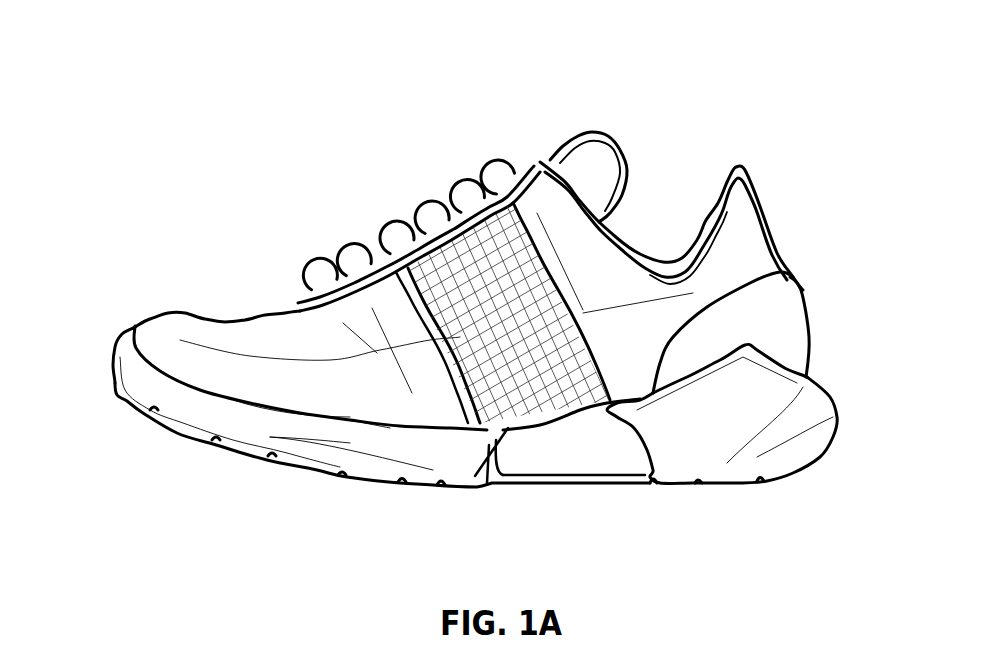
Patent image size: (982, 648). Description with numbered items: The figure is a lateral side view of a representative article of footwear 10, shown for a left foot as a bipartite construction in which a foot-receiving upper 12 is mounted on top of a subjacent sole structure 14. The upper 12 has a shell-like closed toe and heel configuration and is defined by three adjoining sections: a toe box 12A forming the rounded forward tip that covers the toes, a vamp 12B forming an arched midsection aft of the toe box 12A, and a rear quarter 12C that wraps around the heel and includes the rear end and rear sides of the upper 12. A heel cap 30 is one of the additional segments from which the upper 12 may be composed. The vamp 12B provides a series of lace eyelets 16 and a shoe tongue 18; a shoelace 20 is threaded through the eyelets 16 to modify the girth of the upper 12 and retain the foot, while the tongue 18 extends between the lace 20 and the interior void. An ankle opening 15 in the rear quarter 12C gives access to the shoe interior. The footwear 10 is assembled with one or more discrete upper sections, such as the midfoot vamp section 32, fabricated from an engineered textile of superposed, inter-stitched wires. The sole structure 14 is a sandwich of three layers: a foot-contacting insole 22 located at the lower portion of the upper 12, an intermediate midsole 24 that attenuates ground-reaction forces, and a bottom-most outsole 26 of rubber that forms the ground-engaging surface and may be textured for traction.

The article of footwear 10 is at (248, 74).
The upper 12 is at (158, 256).
The toe box 12A is at (223, 308).
The vamp 12B is at (378, 244).
The rear quarter 12C is at (785, 210).
The sole structure 14 is at (232, 492).
The ankle opening 15 is at (678, 162).
The lace eyelets 16 is at (374, 256).
The shoe tongue 18 is at (577, 150).
The shoelace 20 is at (467, 187).
The insole 22 is at (348, 417).
The midsole 24 is at (150, 383).
The outsole 26 is at (150, 425).
The heel cap 30 is at (812, 317).
The midfoot vamp section 32 is at (470, 247).